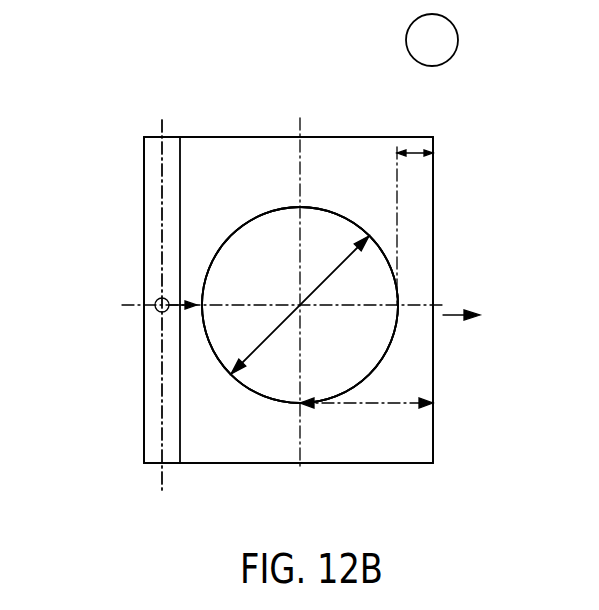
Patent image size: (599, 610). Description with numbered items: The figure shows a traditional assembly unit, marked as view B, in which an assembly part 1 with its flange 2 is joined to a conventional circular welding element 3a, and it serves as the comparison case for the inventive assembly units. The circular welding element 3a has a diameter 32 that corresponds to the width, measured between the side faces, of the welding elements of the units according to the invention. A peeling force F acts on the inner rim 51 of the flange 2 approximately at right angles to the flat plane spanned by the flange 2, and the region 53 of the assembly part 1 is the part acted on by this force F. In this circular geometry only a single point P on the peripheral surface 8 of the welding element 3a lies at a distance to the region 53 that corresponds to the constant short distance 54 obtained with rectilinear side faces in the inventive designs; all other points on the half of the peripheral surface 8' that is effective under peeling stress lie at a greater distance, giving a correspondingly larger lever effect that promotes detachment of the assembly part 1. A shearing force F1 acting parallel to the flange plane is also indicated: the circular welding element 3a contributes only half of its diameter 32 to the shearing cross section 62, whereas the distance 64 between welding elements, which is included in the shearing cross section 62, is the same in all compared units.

The assembly part 1 is at (418, 192).
The flange 2 is at (288, 300).
The welding element 3a is at (357, 340).
The peripheral surface 8 is at (348, 297).
The half of the peripheral surface 8' is at (300, 239).
The diameter 32 is at (335, 266).
The inner rim 51 is at (144, 350).
The region 53 is at (161, 425).
The distance 54 is at (193, 306).
The shearing cross section 62 is at (372, 408).
The distance between the welding elements 64 is at (417, 150).
The force F is at (156, 302).
The force F1 is at (450, 315).
The point P is at (202, 305).
The detail B is at (432, 40).